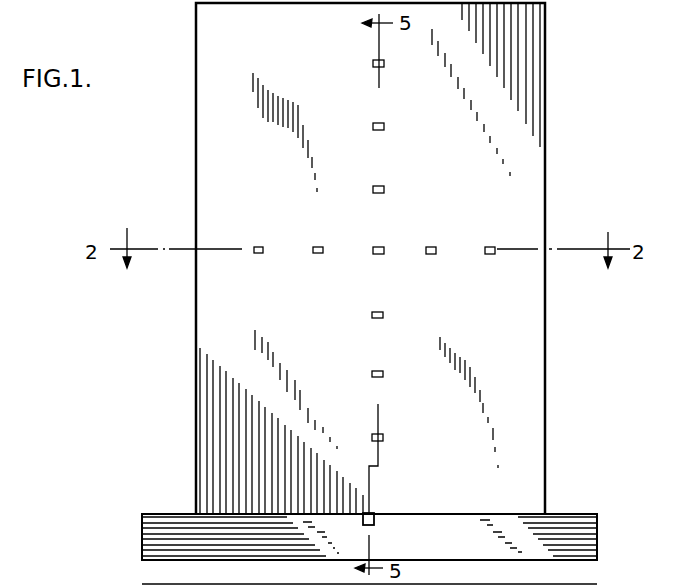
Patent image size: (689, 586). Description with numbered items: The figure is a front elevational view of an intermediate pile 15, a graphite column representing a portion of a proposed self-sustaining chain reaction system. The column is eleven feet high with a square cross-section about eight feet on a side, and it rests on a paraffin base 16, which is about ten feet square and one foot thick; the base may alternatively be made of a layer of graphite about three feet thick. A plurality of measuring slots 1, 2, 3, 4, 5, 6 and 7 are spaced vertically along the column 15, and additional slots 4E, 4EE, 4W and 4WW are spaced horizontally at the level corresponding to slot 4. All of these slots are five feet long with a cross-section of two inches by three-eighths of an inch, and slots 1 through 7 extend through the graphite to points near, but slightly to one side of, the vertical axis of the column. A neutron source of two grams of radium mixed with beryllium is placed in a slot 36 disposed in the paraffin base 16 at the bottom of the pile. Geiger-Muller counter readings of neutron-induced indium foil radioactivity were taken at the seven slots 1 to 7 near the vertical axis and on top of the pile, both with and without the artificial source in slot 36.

The measuring slot 1 is at (383, 437).
The measuring slot 2 is at (383, 373).
The measuring slot 3 is at (383, 314).
The measuring slot 4 is at (383, 247).
The slot 4E is at (322, 247).
The slot 4EE is at (271, 238).
The slot 4W is at (442, 239).
The slot 4WW is at (501, 239).
The measuring slot 5 is at (385, 189).
The measuring slot 6 is at (385, 126).
The measuring slot 7 is at (385, 63).
The pile 15 is at (548, 392).
The paraffin base 16 is at (585, 533).
The slot 36 is at (374, 514).